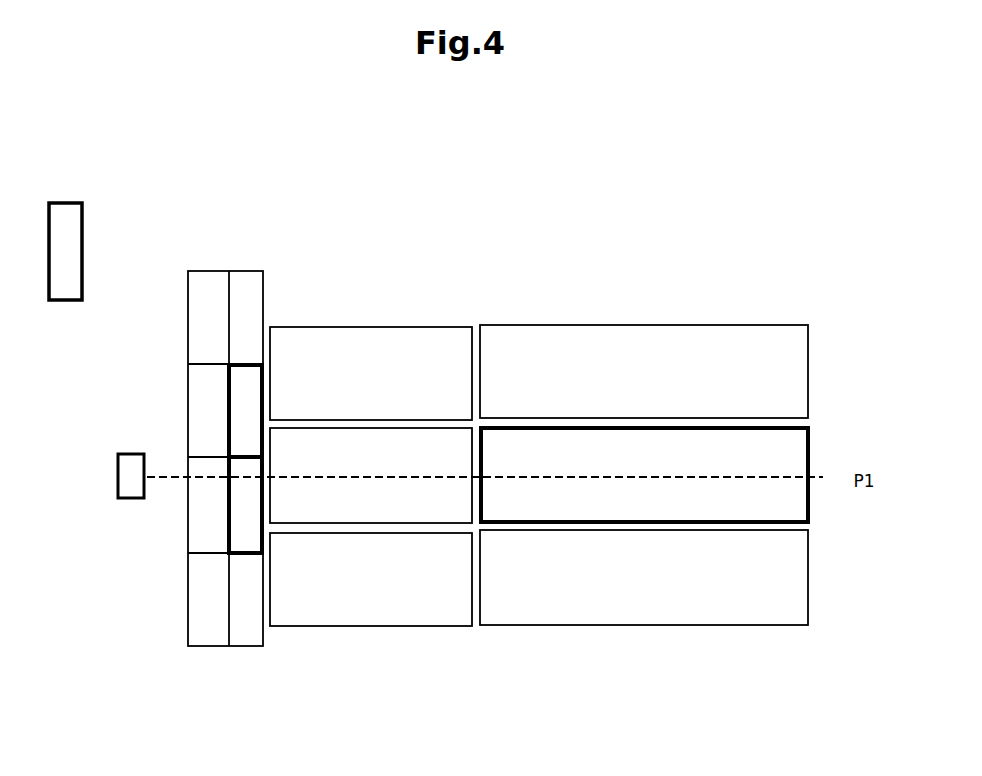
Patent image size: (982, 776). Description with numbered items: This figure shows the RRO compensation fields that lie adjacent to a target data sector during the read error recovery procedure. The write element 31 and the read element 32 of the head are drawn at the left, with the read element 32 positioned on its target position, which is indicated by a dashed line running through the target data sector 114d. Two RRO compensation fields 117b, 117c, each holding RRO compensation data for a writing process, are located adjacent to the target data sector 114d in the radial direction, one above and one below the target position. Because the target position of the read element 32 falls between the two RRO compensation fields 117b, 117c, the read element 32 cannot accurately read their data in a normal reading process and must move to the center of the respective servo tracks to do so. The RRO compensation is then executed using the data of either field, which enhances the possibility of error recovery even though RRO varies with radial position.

The write element 31 is at (63, 202).
The read element 32 is at (128, 500).
The RRO compensation field 117b is at (244, 380).
The RRO compensation field 117c is at (244, 523).
The target data sector 114d is at (603, 426).